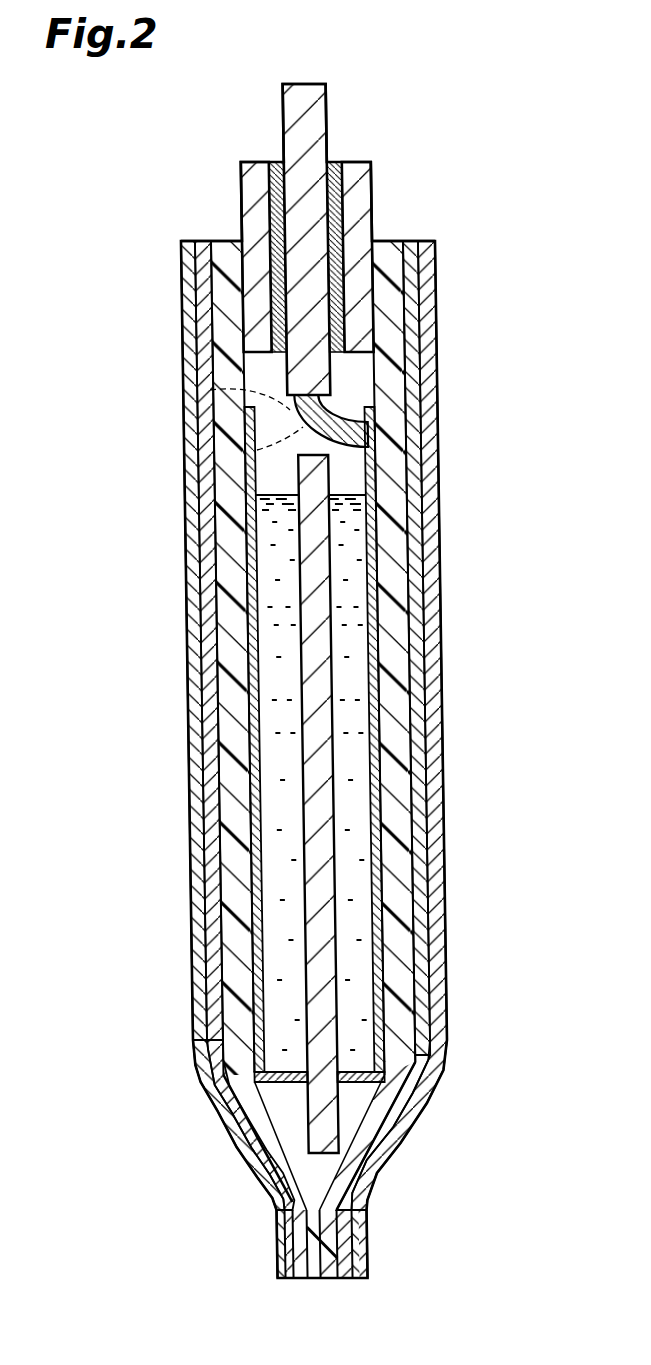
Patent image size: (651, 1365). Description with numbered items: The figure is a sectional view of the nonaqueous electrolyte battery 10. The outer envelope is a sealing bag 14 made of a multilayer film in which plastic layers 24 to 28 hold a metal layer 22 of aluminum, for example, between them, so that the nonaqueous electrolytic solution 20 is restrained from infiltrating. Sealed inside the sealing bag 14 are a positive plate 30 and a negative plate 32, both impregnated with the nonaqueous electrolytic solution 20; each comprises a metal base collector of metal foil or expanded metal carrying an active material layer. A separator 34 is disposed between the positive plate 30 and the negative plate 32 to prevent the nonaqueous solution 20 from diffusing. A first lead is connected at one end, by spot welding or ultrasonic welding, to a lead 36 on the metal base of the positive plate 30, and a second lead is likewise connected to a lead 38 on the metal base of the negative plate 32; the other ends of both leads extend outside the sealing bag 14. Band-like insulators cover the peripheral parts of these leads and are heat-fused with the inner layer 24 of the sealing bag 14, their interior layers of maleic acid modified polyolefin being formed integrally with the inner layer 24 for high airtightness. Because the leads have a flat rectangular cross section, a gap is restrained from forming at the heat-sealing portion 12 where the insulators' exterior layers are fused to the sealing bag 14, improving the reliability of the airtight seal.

The nonaqueous electrolyte battery 10 is at (493, 66).
The heat-sealing portion 12 is at (347, 1280).
The sealing bag 14 is at (437, 332).
The nonaqueous electrolytic solution 20 is at (348, 770).
The metal layer 22 is at (425, 270).
The inner layer 24 is at (228, 252).
The plastic layer 28 is at (192, 283).
The positive plate 30 is at (372, 556).
The negative plate 32 is at (258, 626).
The separator 34 is at (318, 650).
The lead 36 is at (352, 404).
The lead 38 is at (210, 390).